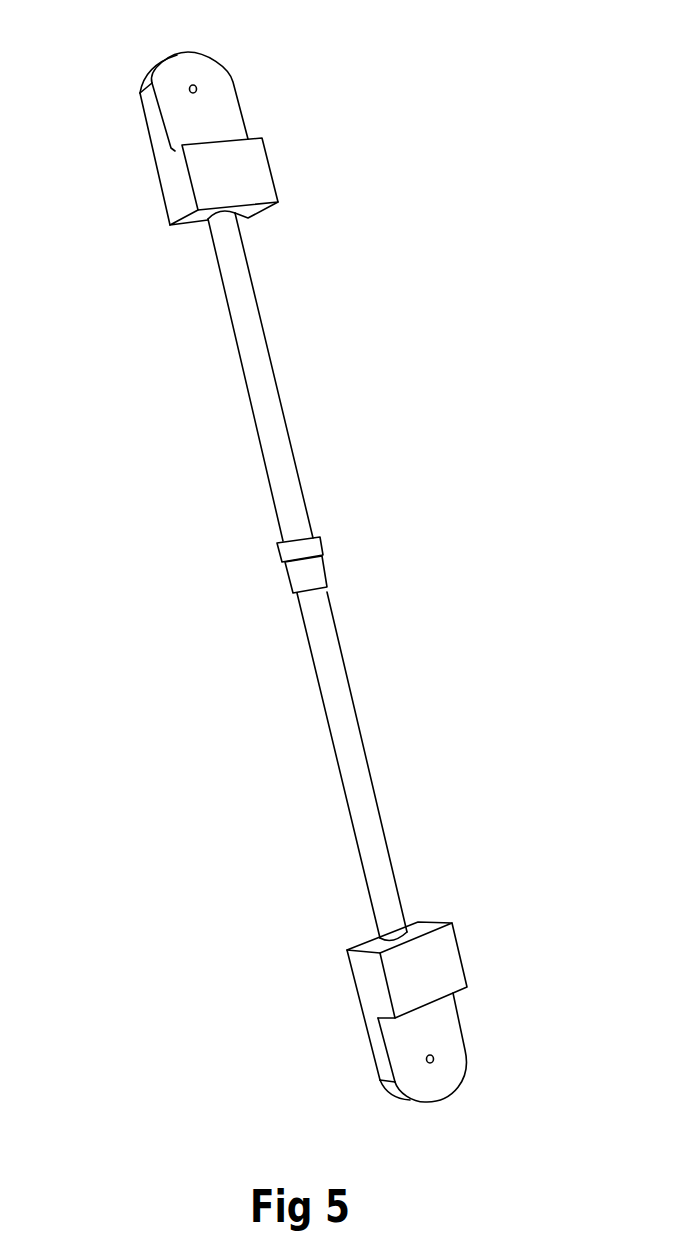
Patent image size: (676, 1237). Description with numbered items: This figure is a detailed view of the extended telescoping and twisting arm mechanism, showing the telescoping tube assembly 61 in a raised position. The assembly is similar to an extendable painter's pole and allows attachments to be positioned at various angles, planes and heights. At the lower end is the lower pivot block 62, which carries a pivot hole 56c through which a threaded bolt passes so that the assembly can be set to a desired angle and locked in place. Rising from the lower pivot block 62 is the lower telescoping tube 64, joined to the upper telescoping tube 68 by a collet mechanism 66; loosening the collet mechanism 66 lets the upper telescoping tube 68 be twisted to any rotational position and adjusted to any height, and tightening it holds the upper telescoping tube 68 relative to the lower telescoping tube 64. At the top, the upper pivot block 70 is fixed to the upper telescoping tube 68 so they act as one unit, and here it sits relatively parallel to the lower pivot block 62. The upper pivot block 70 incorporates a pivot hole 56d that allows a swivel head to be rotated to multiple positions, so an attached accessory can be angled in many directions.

The telescoping tube assembly 61 is at (245, 550).
The pivot hole 56d is at (198, 88).
The upper pivot block 70 is at (257, 177).
The upper telescoping tube 68 is at (268, 380).
The collet mechanism 66 is at (315, 572).
The lower telescoping tube 64 is at (382, 847).
The lower pivot block 62 is at (365, 980).
The pivot hole 56c is at (435, 1057).